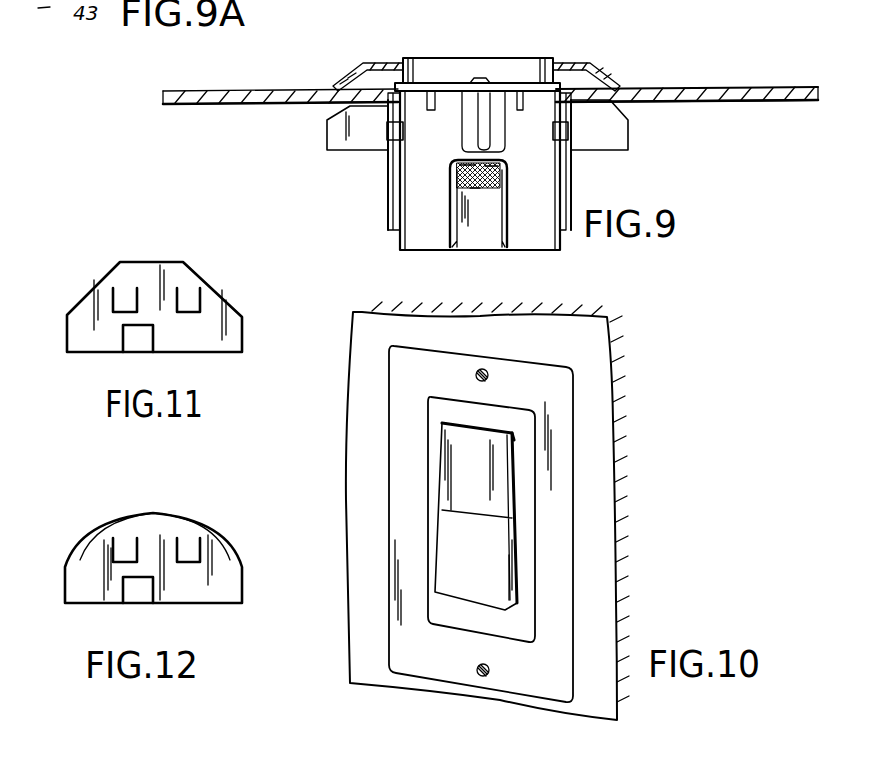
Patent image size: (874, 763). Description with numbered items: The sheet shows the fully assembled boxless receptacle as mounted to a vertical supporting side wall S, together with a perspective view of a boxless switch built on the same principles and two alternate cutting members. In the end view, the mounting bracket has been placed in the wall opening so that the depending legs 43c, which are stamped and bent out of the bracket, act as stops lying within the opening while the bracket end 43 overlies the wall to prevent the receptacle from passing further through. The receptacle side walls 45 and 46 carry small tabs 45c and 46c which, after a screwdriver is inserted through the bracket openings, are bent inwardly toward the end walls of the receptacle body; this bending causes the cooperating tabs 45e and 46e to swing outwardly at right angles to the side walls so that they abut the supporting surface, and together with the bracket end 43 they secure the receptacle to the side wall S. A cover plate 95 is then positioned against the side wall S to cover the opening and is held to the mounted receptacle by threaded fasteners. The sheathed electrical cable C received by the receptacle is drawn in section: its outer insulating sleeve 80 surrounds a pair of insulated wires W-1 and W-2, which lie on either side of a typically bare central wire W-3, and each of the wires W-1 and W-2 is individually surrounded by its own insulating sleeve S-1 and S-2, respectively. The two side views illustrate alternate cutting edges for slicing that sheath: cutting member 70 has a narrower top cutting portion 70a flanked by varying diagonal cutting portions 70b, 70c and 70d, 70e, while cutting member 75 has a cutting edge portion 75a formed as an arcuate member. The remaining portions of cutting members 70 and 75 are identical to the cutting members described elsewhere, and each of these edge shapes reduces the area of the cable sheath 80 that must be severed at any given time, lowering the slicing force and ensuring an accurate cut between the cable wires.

In FIG. 9, the supporting side wall S is at (295, 90).
In FIG. 9, the cover plate 95 is at (590, 64).
In FIG. 9, the mounting bracket end 43 is at (478, 70).
In FIG. 9, the depending legs 43c is at (427, 93).
In FIG. 9, the side wall 45 is at (388, 176).
In FIG. 9, the tab 45e is at (340, 132).
In FIG. 9, the tab 45c is at (393, 131).
In FIG. 9, the side wall 46 is at (570, 167).
In FIG. 9, the tab 46e is at (618, 125).
In FIG. 9, the tab 46c is at (566, 140).
In FIG. 9, the outer insulating sleeve 80 is at (452, 205).
In FIG. 9, the sheathed electrical cable C is at (490, 163).
In FIG. 9, the insulated wire W-1 is at (473, 162).
In FIG. 9, the insulated wire W-2 is at (500, 170).
In FIG. 9, the central wire W-3 is at (473, 190).
In FIG. 9, the insulating sleeve S-1 is at (452, 176).
In FIG. 9, the insulating sleeve S-2 is at (500, 182).
In FIG. 11, the cutting member 70 is at (230, 338).
In FIG. 11, the top cutting portion 70a is at (152, 262).
In FIG. 11, the diagonal cutting portion 70b is at (212, 278).
In FIG. 11, the diagonal cutting portion 70c is at (100, 278).
In FIG. 11, the diagonal cutting portion 70d is at (230, 307).
In FIG. 11, the diagonal cutting portion 70e is at (70, 310).
In FIG. 12, the cutting member 75 is at (227, 588).
In FIG. 12, the cutting edge portion 75a is at (163, 515).